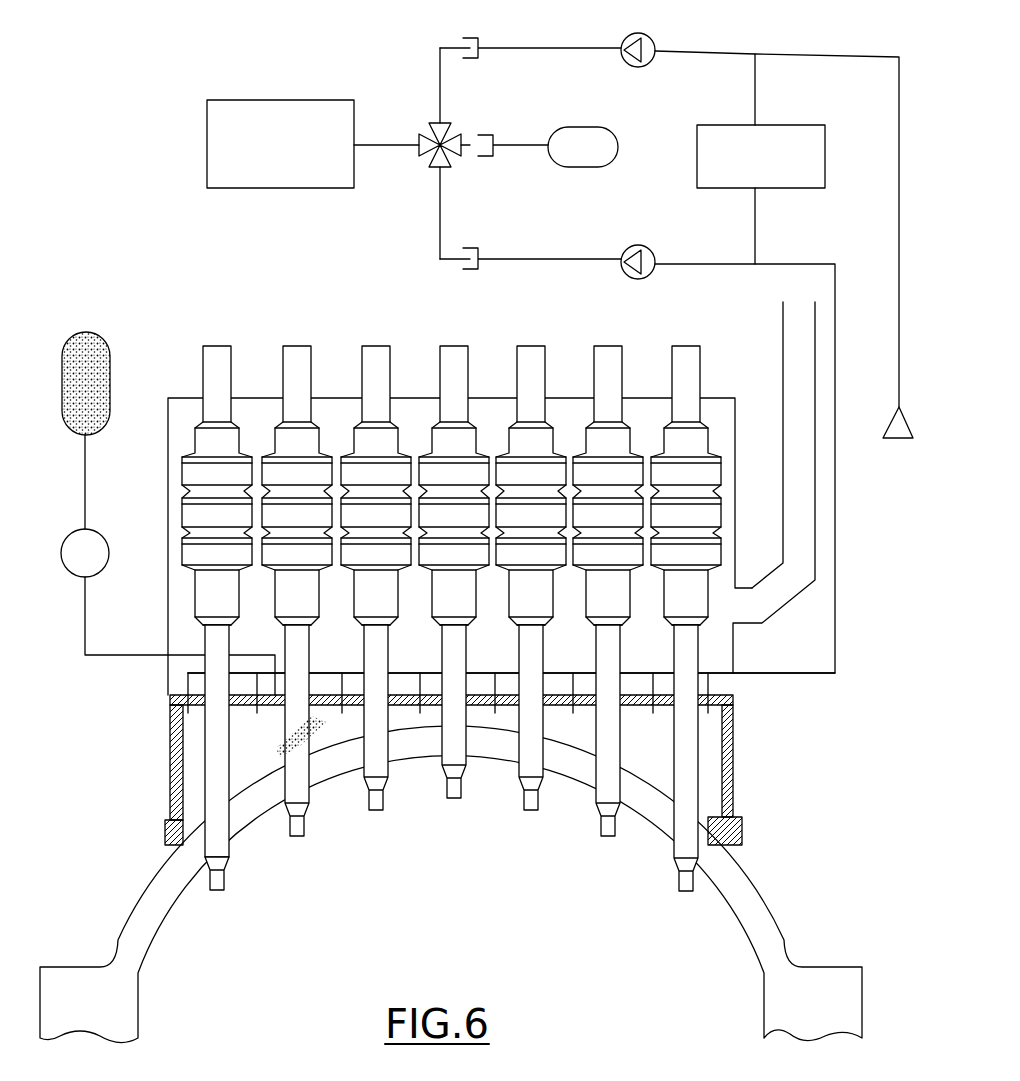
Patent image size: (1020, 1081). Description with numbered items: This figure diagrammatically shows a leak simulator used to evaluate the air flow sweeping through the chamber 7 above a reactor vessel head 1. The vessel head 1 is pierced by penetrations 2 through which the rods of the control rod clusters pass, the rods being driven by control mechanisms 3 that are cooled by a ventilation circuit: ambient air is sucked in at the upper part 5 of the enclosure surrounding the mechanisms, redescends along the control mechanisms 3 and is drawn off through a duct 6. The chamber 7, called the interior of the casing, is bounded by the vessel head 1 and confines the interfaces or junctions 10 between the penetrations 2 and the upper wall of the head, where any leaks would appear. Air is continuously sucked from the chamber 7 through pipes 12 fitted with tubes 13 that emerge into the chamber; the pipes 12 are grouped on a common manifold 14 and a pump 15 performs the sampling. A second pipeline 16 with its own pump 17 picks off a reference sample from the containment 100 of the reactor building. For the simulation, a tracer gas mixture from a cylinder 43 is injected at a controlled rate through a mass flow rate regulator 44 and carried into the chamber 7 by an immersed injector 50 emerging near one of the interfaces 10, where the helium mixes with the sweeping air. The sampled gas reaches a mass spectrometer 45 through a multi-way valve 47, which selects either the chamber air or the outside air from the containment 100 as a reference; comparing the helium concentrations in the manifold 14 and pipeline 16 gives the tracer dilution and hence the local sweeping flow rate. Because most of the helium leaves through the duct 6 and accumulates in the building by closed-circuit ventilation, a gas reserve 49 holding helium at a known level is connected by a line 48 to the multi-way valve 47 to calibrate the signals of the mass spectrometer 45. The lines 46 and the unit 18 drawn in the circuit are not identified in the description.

The vessel head 1 is at (790, 903).
The penetrations 2 is at (221, 846).
The control mechanisms 3 is at (188, 630).
The upper part of the enclosure 5 is at (567, 417).
The duct 6 is at (781, 362).
The chamber 7 is at (632, 742).
The interfaces or junctions 10 is at (201, 811).
The pipes 12 is at (323, 668).
The tubes 13 is at (340, 724).
The common manifold 14 is at (838, 640).
The pump 15 is at (654, 278).
The pipeline 16 is at (812, 55).
The pump 17 is at (657, 38).
The filter 18 is at (788, 124).
The cylinder 43 is at (85, 330).
The mass flow rate regulator 44 is at (70, 578).
The mass spectrometer 45 is at (204, 98).
The connecting lines 46 is at (447, 88).
The multi-way valve 47 is at (428, 170).
The line 48 is at (524, 154).
The gas reserve 49 is at (616, 124).
The immersed injector 50 is at (272, 780).
The containment of the reactor building 100 is at (896, 443).